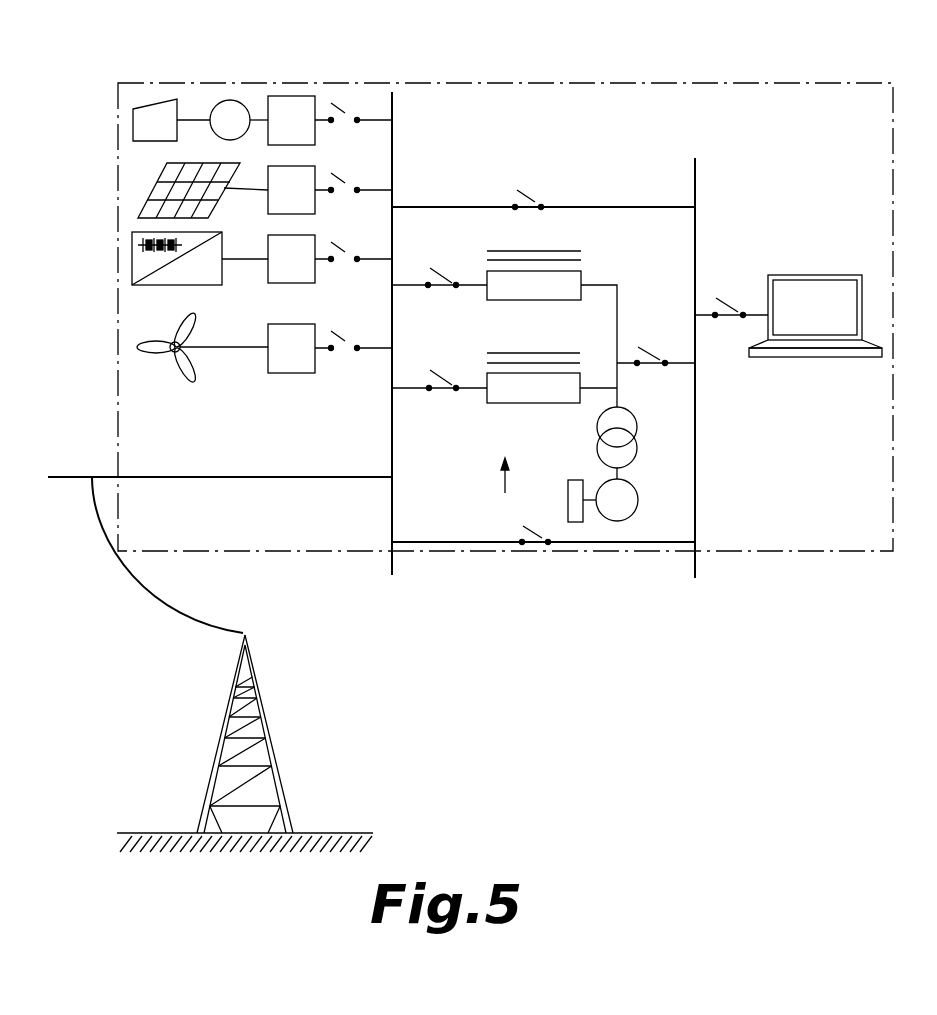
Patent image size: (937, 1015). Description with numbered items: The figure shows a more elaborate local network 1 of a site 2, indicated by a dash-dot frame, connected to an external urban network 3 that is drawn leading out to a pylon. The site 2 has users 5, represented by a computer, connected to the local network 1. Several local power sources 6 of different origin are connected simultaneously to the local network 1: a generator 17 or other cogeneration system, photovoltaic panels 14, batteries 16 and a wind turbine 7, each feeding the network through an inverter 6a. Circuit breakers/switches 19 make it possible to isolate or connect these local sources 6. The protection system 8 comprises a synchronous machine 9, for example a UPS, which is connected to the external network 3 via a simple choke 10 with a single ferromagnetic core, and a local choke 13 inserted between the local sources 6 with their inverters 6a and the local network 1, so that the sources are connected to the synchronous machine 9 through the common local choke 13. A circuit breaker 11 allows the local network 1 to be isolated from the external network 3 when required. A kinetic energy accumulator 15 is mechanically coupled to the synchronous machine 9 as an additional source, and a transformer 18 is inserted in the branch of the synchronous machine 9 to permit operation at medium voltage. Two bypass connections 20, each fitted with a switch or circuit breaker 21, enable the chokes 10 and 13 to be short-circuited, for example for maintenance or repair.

The local network 1 is at (698, 236).
The site 2 is at (797, 82).
The external urban network 3 is at (55, 480).
The users 5 is at (807, 357).
The local power source 6 is at (162, 200).
The inverter 6a is at (293, 72).
The wind turbine 7 is at (150, 347).
The protection system 8 is at (499, 490).
The synchronous machine 9 is at (620, 497).
The choke 10 is at (513, 385).
The circuit breaker 11 is at (438, 378).
The local choke 13 is at (513, 300).
The photovoltaic panels 14 is at (150, 186).
The kinetic energy accumulator 15 is at (568, 488).
The batteries 16 is at (132, 262).
The generator 17 is at (147, 129).
The transformer 18 is at (628, 425).
The circuit breakers/switches 19 is at (345, 341).
The bypass connections 20 is at (607, 206).
The switch or circuit breaker 21 is at (536, 200).